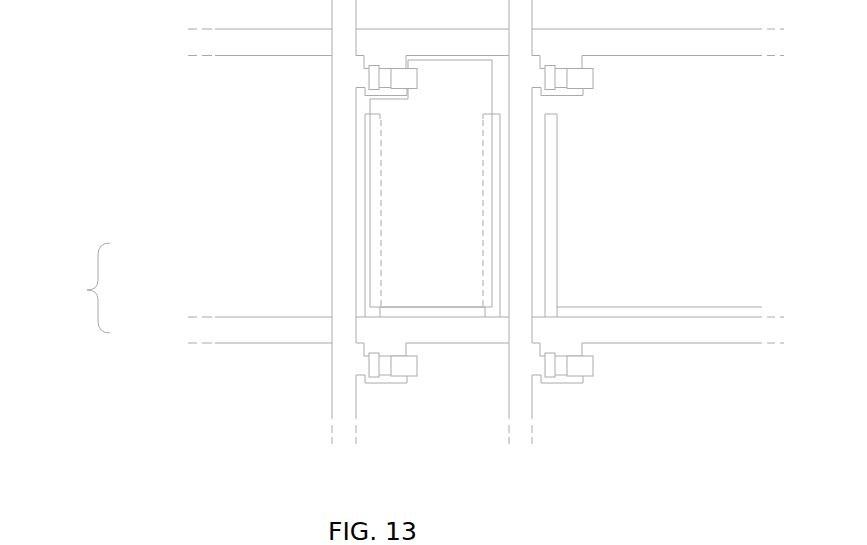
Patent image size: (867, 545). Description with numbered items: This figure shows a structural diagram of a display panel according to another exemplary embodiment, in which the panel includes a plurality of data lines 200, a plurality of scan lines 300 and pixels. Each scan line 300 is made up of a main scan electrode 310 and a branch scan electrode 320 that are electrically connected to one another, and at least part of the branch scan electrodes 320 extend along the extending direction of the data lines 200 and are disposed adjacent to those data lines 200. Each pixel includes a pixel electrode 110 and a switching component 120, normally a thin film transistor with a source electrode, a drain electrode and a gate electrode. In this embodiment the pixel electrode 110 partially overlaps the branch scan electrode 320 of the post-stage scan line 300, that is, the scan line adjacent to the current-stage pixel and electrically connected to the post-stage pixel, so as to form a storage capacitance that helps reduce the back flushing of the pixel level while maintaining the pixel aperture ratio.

The pixel electrode 110 is at (453, 98).
The switching component 120 is at (378, 72).
The data line 200 is at (340, 363).
The scan line 300 is at (72, 288).
The main scan electrode 310 is at (237, 327).
The branch scan electrode 320 is at (497, 180).